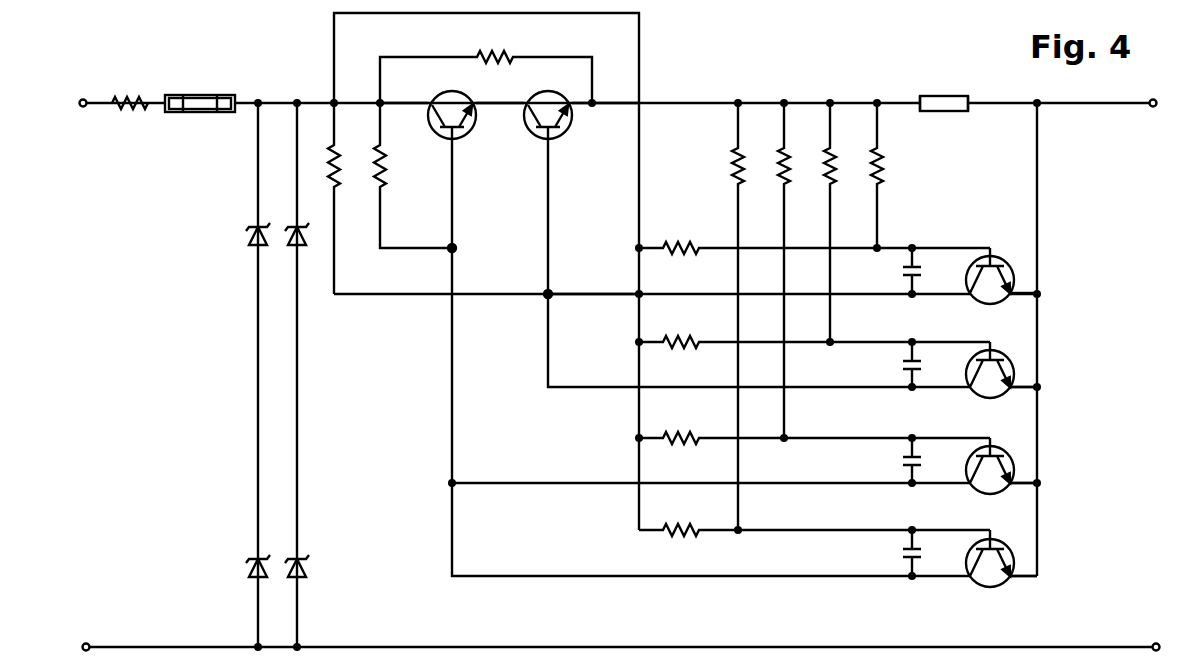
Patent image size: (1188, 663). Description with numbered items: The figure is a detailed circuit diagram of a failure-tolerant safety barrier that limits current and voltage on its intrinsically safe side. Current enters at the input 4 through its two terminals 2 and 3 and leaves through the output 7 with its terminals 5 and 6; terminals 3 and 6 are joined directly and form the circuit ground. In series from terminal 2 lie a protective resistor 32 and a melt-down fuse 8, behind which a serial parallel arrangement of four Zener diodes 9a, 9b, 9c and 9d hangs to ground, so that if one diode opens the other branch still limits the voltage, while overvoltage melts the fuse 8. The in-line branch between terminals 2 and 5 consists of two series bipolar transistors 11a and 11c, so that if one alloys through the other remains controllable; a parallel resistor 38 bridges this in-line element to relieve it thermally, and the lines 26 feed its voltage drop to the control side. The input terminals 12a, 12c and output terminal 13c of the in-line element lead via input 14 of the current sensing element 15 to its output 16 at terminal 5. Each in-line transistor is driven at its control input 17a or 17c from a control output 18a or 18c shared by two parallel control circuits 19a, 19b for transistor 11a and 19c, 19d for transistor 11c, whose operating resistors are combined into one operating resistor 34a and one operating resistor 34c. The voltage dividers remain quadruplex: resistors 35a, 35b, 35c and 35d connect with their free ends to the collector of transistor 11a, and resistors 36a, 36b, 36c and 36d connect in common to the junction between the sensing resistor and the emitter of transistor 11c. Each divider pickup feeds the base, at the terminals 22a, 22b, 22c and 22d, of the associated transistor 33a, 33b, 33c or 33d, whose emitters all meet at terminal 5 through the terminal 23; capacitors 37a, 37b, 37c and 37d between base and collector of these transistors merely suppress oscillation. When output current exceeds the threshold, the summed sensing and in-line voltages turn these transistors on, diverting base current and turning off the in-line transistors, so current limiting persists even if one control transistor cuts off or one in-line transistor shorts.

The input terminal 2 is at (83, 108).
The input terminal 3 is at (86, 642).
The input 4 is at (120, 370).
The output terminal 5 is at (1153, 108).
The output terminal 6 is at (1156, 642).
The output 7 is at (1096, 331).
The melt-down fuse 8 is at (208, 95).
The Zener diode 9a is at (252, 230).
The Zener diode 9b is at (292, 230).
The Zener diode 9c is at (252, 562).
The Zener diode 9d is at (300, 562).
The bipolar transistor 11a is at (470, 130).
The bipolar transistor 11c is at (566, 130).
The input terminal of in-line control element 12a is at (405, 101).
The input terminal of in-line control element 12c is at (505, 101).
The output terminal of in-line control element 13c is at (613, 101).
The input of current sensing element 14 is at (912, 95).
The current sensing element 15 is at (942, 96).
The output of current sensing element 16 is at (968, 95).
The control input 17a is at (455, 202).
The control input 17c is at (551, 202).
The control output 18a is at (457, 250).
The control output 18c is at (552, 288).
The control circuit 19a is at (1054, 556).
The control circuit 19b is at (1054, 463).
The control circuit 19c is at (1054, 371).
The control circuit 19d is at (1054, 280).
The control circuit input terminal 22a is at (950, 528).
The control circuit input terminal 22b is at (950, 436).
The control circuit input terminal 22c is at (950, 340).
The control circuit input terminal 22d is at (950, 246).
The control circuit terminal 23 is at (1040, 190).
The line 26 is at (641, 31).
The protective resistor 32 is at (140, 97).
The transistor 33a is at (997, 538).
The transistor 33b is at (997, 446).
The transistor 33c is at (997, 350).
The transistor 33d is at (995, 256).
The operating resistor 34a is at (386, 185).
The operating resistor 34c is at (338, 192).
The voltage divider resistor 35a is at (680, 538).
The voltage divider resistor 35b is at (682, 444).
The voltage divider resistor 35c is at (682, 348).
The voltage divider resistor 35d is at (675, 240).
The voltage divider resistor 36a is at (732, 162).
The voltage divider resistor 36b is at (778, 180).
The voltage divider resistor 36c is at (824, 180).
The voltage divider resistor 36d is at (884, 164).
The capacitor 37a is at (903, 561).
The capacitor 37b is at (903, 467).
The capacitor 37c is at (903, 371).
The capacitor 37d is at (903, 277).
The parallel resistor 38 is at (478, 50).